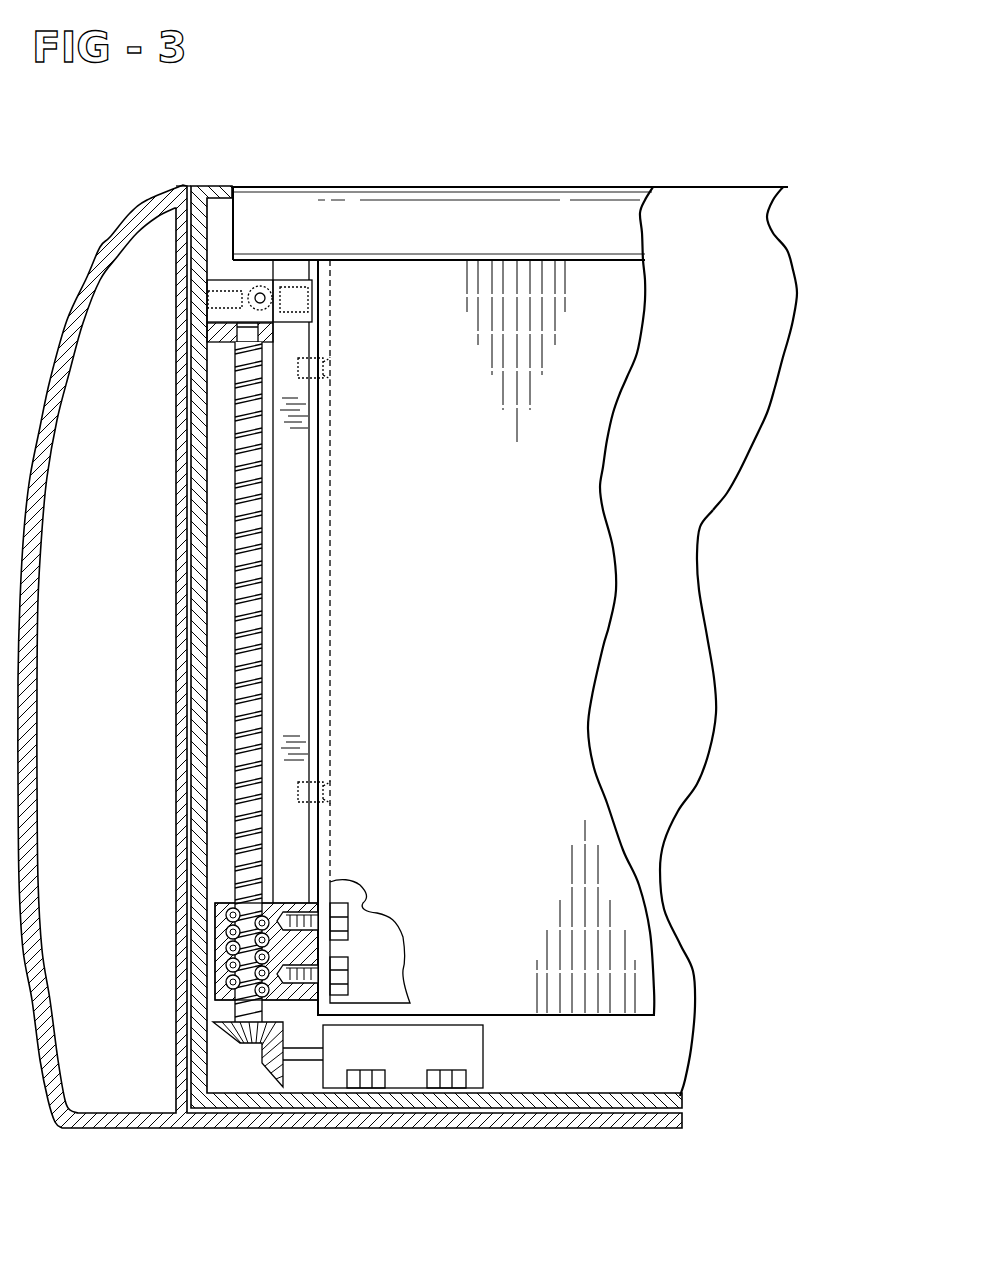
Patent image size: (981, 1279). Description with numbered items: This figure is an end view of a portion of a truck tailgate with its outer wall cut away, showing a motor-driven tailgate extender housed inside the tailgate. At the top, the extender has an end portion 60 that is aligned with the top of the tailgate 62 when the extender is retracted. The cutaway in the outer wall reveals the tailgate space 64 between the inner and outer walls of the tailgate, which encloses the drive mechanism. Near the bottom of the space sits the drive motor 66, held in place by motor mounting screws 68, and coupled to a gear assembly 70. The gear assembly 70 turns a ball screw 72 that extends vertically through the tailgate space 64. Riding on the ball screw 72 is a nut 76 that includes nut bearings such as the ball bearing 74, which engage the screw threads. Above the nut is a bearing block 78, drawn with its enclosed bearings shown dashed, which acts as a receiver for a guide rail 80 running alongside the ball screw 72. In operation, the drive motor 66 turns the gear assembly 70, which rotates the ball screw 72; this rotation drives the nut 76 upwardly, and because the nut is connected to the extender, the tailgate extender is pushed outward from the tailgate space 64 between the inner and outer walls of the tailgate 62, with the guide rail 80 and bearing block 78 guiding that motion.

The end portion 60 is at (513, 218).
The tailgate 62 is at (762, 340).
The tailgate space 64 is at (694, 468).
The drive motor 66 is at (457, 1033).
The motor mounting screws 68 is at (445, 1078).
The gear assembly 70 is at (277, 1062).
The ball screw 72 is at (236, 493).
The ball bearing 74 is at (205, 682).
The nut 76 is at (300, 947).
The bearing block 78 is at (297, 286).
The guide rail 80 is at (296, 545).